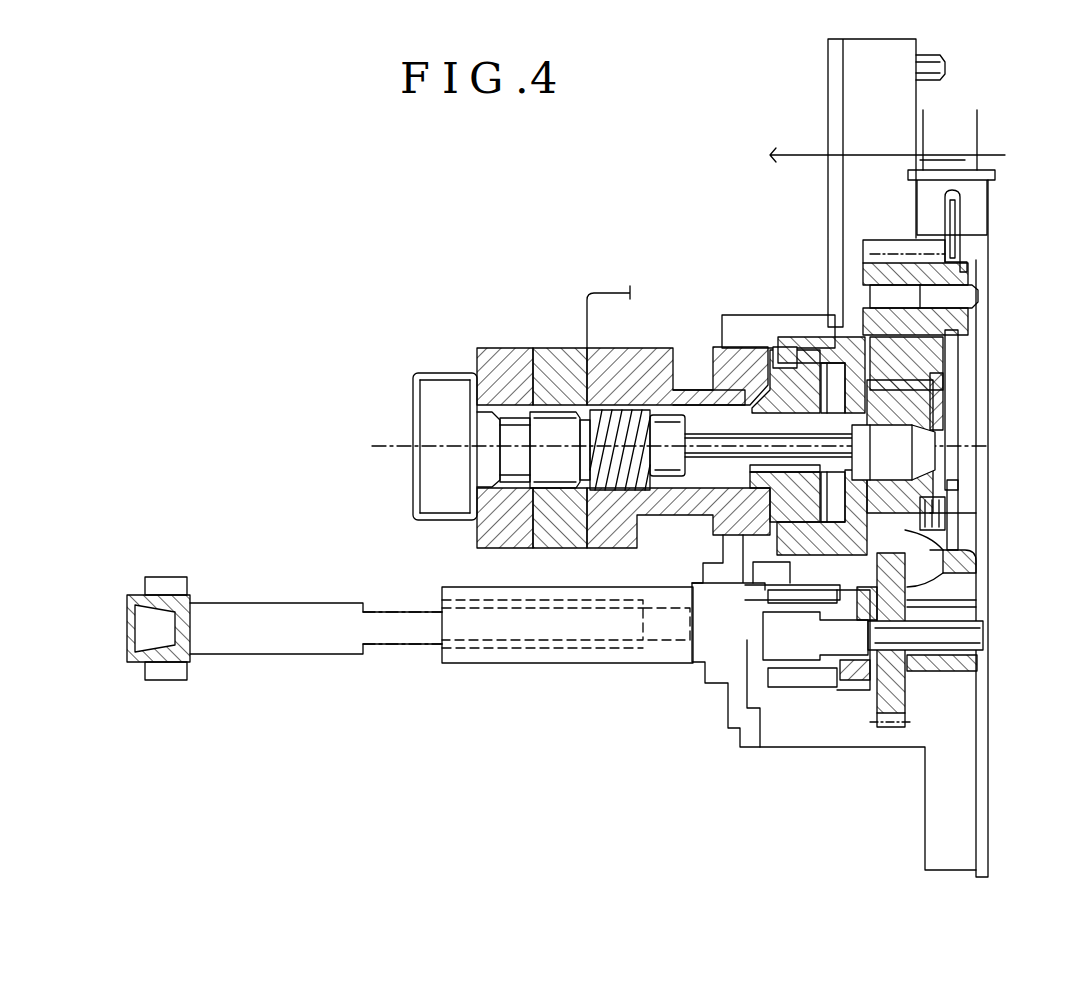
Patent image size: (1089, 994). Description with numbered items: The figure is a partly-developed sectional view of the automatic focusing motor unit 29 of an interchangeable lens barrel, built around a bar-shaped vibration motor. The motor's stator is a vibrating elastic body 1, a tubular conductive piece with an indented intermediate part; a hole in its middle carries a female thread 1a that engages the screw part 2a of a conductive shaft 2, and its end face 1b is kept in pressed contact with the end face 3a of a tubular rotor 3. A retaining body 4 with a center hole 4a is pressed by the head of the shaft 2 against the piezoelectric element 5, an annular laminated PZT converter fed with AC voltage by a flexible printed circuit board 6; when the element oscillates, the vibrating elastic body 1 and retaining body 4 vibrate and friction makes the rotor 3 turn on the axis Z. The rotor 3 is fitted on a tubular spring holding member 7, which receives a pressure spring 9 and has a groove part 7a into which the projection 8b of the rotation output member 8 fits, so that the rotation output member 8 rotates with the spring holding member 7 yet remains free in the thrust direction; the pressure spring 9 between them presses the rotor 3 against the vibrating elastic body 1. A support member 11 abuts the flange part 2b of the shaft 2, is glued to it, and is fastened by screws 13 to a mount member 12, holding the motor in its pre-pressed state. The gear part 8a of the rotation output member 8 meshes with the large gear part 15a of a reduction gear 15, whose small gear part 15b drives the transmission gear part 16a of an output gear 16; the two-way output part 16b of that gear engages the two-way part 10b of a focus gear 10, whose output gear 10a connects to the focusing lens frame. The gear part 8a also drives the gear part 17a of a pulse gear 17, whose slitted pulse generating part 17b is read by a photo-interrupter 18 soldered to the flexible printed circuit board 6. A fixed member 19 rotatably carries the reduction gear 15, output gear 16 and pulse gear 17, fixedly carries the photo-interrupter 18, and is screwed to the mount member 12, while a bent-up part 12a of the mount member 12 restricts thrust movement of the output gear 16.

The vibrating elastic body 1 is at (628, 362).
The female thread 1a is at (660, 365).
The end face 1b is at (750, 360).
The conductive shaft 2 is at (445, 400).
The screw part 2a is at (620, 520).
The flange part 2b is at (832, 345).
The rotor 3 is at (802, 340).
The end face 3a is at (750, 585).
The retaining body 4 is at (502, 360).
The center hole 4a is at (512, 385).
The piezoelectric element 5 is at (548, 540).
The flexible printed circuit board 6 is at (610, 285).
The spring holding member 7 is at (730, 520).
The groove part 7a is at (930, 470).
The rotation output member 8 is at (950, 558).
The gear part 8a is at (935, 580).
The projection 8b is at (960, 492).
The pressure spring 9 is at (782, 360).
The focus gear 10 is at (277, 650).
The output gear 10a is at (168, 580).
The two-way part 10b is at (385, 650).
The support member 11 is at (920, 360).
The mount member 12 is at (940, 405).
The bent-up part 12a is at (880, 713).
The screws 13 is at (945, 508).
The reduction gear 15 is at (910, 690).
The large gear part 15a is at (915, 725).
The small gear part 15b is at (840, 690).
The output gear 16 is at (638, 655).
The transmission gear part 16a is at (785, 680).
The two-way output part 16b is at (522, 650).
The pulse gear 17 is at (950, 305).
The gear part 17a is at (950, 262).
The pulse generating part 17b is at (956, 215).
The photo-interrupter 18 is at (980, 190).
The fixed member 19 is at (908, 43).
The automatic focusing motor unit 29 is at (712, 227).
The axis Z is at (400, 454).